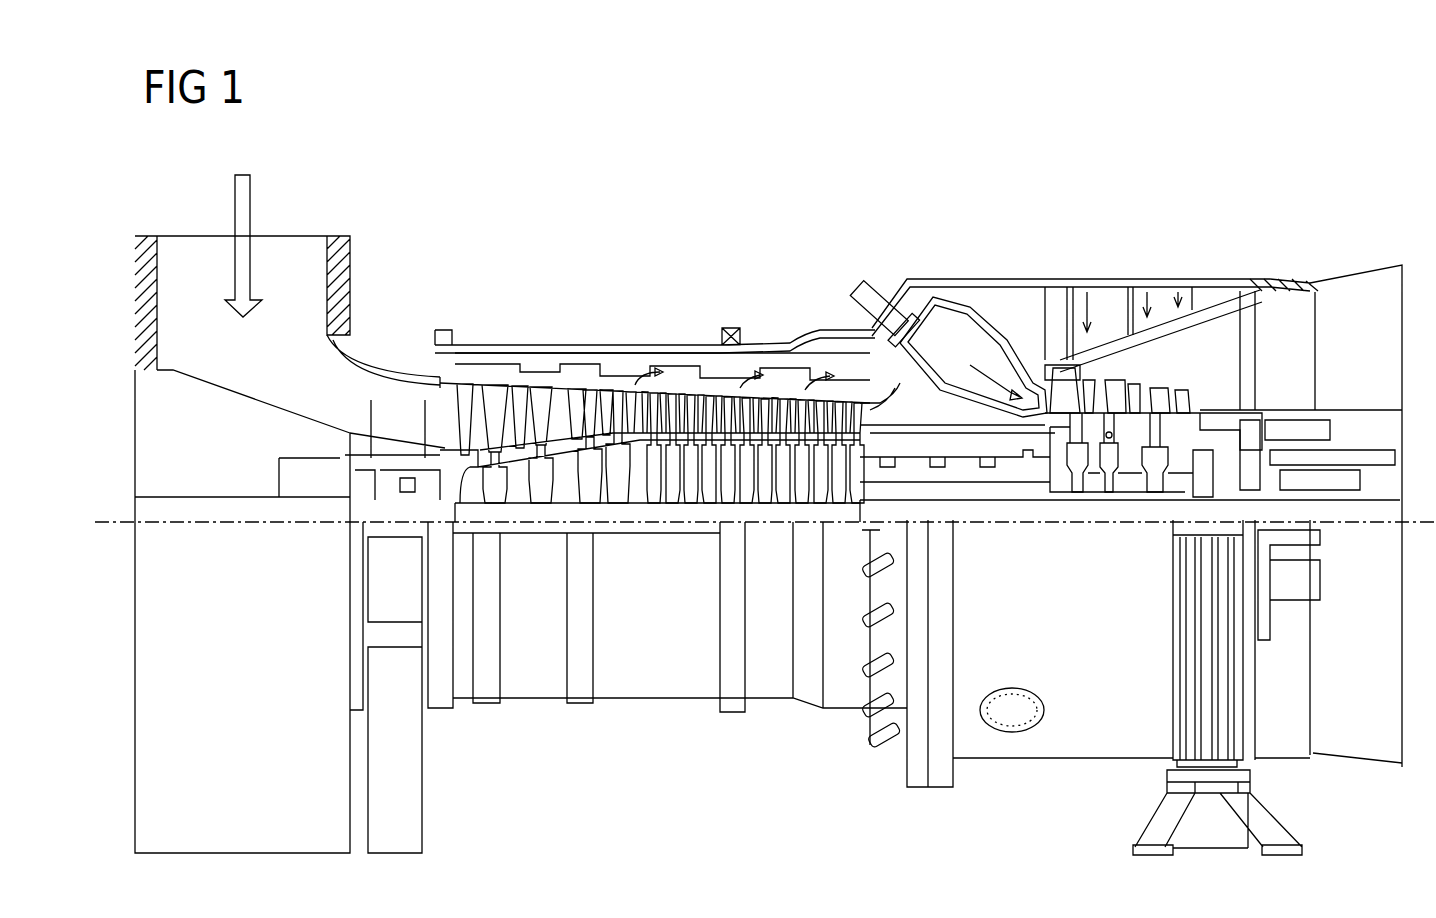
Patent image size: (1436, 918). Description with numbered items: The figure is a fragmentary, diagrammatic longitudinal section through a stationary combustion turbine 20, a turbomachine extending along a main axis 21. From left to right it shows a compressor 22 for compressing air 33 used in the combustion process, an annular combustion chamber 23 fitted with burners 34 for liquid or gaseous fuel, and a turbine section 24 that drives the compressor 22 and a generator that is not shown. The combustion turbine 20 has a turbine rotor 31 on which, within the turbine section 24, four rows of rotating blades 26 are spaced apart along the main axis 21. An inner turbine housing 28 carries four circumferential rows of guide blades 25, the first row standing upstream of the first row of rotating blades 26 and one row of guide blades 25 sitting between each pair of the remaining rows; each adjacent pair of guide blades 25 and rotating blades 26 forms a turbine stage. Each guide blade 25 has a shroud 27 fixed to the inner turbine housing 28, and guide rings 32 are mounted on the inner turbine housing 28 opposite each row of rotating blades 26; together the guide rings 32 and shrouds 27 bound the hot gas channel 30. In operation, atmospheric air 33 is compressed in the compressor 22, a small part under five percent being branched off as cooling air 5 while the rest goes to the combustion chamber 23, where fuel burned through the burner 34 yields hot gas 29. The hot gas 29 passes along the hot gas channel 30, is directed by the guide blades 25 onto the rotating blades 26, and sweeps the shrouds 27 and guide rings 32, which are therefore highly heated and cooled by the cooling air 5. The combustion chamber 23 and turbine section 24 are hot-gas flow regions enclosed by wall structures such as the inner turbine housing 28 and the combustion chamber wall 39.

The cooling air 5 is at (820, 330).
The combustion turbine 20 is at (489, 300).
The main axis 21 is at (210, 522).
The compressor 22 is at (598, 268).
The annular combustion chamber 23 is at (957, 340).
The turbine section 24 is at (1142, 215).
The guide blades 25 is at (1172, 477).
The rotating blades 26 is at (1107, 450).
The shroud 27 is at (1105, 345).
The inner turbine housing 28 is at (1170, 310).
The hot gas 29 is at (1000, 385).
The hot gas channel 30 is at (1225, 340).
The turbine rotor 31 is at (878, 482).
The guide rings 32 is at (1213, 330).
The air 33 is at (243, 212).
The burner 34 is at (858, 287).
The combustion chamber wall 39 is at (1047, 277).